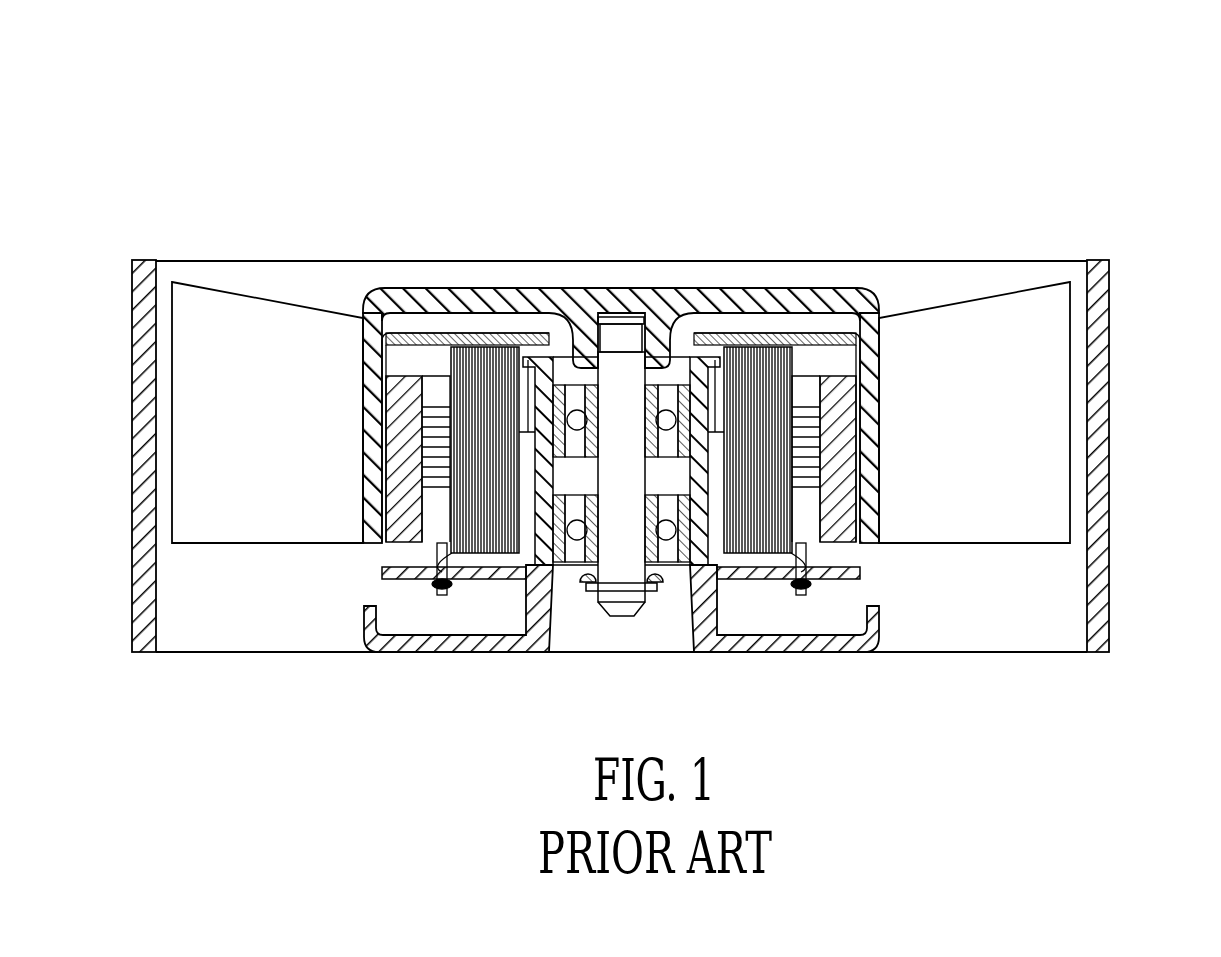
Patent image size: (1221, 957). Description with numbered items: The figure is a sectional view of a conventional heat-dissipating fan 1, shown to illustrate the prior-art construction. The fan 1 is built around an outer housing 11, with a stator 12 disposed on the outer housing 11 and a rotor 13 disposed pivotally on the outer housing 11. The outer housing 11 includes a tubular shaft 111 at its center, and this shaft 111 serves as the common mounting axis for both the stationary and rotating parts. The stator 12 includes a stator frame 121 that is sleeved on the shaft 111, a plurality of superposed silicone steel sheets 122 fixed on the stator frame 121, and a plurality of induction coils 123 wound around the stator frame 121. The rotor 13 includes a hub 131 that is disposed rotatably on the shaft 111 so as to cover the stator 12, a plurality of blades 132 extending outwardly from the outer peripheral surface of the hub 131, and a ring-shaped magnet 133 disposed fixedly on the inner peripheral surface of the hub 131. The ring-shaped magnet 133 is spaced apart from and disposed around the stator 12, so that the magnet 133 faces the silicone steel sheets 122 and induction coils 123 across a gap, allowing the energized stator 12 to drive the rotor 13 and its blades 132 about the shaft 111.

The heat-dissipating fan 1 is at (639, 140).
The outer housing 11 is at (1125, 428).
The tubular shaft 111 is at (731, 593).
The stator 12 is at (437, 340).
The stator frame 121 is at (513, 562).
The silicone steel sheets 122 is at (813, 472).
The induction coils 123 is at (767, 348).
The rotor 13 is at (666, 350).
The hub 131 is at (840, 287).
The blades 132 is at (274, 323).
The ring-shaped magnet 133 is at (873, 393).